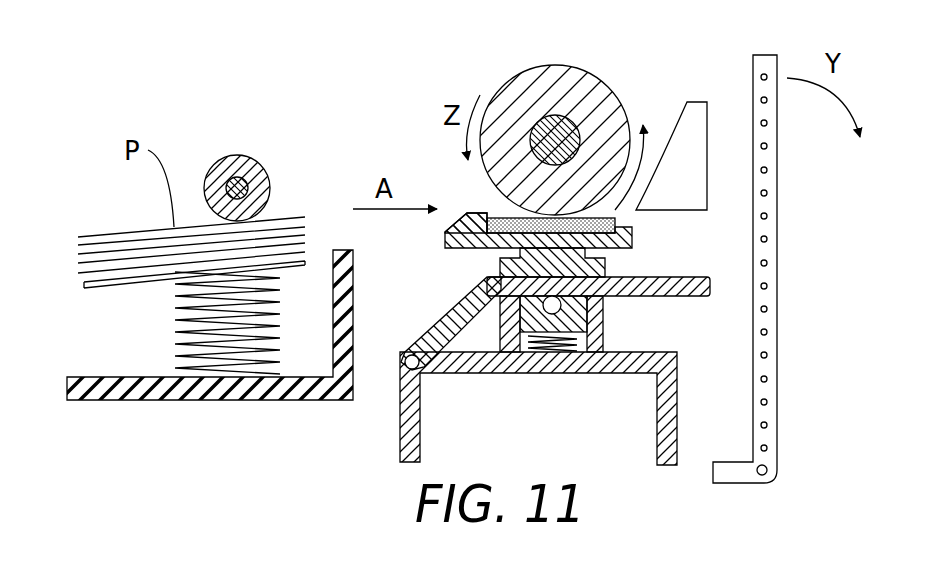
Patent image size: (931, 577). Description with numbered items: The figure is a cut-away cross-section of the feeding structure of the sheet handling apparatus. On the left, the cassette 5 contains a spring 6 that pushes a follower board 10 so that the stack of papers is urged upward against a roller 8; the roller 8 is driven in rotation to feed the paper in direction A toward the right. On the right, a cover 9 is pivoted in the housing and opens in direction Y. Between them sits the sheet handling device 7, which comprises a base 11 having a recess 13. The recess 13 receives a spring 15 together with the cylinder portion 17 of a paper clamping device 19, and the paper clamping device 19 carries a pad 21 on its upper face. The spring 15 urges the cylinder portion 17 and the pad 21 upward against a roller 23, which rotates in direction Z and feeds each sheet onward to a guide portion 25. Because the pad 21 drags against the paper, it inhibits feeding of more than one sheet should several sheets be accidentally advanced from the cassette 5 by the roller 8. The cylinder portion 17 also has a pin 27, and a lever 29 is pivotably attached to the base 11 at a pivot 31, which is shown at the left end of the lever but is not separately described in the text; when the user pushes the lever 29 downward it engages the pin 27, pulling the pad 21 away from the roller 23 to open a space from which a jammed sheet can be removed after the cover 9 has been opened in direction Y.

The cassette 5 is at (270, 402).
The spring 6 is at (178, 368).
The sheet handling device 7 is at (458, 253).
The roller 8 is at (243, 155).
The cover 9 is at (777, 262).
The follower board 10 is at (118, 290).
The base 11 is at (657, 408).
The recess 13 is at (578, 345).
The spring 15 is at (548, 353).
The cylinder portion 17 is at (588, 251).
The paper clamping device 19 is at (633, 230).
The pad 21 is at (492, 214).
The roller 23 is at (548, 65).
The guide portion 25 is at (698, 147).
The pin 27 is at (561, 306).
The lever 29 is at (692, 279).
The pivot arm 31 is at (410, 350).